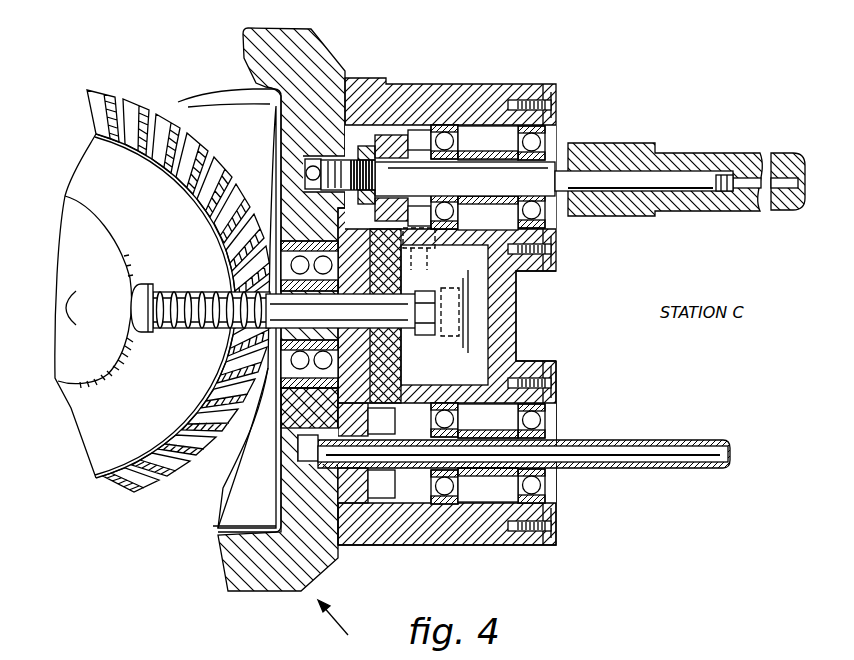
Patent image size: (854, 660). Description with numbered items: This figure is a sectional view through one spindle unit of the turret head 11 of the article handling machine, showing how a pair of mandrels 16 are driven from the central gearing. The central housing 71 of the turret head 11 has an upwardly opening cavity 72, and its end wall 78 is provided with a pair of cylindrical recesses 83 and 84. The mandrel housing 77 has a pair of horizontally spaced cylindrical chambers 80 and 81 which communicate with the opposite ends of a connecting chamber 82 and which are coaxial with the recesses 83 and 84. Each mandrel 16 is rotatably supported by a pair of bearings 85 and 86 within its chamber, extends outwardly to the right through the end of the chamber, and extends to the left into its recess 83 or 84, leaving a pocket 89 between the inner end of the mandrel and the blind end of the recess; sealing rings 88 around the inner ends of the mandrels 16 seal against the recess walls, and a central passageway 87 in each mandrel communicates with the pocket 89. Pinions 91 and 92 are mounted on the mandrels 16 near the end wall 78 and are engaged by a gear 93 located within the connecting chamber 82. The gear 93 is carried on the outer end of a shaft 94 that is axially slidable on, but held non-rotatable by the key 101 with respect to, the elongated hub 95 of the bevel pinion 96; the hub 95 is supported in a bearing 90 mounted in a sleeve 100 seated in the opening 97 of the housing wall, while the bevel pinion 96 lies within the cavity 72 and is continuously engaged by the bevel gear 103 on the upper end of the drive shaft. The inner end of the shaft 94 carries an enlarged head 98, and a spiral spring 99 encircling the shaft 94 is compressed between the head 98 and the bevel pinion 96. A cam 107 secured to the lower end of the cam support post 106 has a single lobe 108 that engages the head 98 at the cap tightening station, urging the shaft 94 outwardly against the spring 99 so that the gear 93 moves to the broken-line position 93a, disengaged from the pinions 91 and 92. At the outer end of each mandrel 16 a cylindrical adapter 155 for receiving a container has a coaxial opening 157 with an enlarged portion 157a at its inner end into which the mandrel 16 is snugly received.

The turret head 11 is at (339, 622).
The mandrel 16 is at (667, 172).
The central housing 71 is at (268, 465).
The cavity 72 is at (205, 500).
The mandrel housing 77 is at (467, 533).
The end wall 78 is at (333, 517).
The cylindrical chamber 80 is at (458, 125).
The cylindrical chamber 81 is at (473, 487).
The connecting chamber 82 is at (478, 307).
The cylindrical recess 83 is at (310, 153).
The cylindrical recess 84 is at (290, 432).
The bearing 85 is at (447, 143).
The bearing 86 is at (543, 123).
The passageway 87 is at (596, 447).
The sealing ring 88 is at (317, 178).
The pocket 89 is at (296, 177).
The bearing 90 is at (317, 362).
The pinion 91 is at (383, 139).
The pinion 92 is at (378, 468).
The gear 93 is at (430, 340).
The disengaged gear position 93a is at (418, 232).
The shaft 94 is at (190, 281).
The elongated hub 95 is at (317, 266).
The bevel pinion 96 is at (223, 333).
The opening 97 is at (309, 408).
The enlarged head 98 is at (137, 327).
The spiral spring 99 is at (158, 280).
The sleeve 100 is at (245, 448).
The key 101 is at (358, 295).
The bevel gear 103 is at (95, 435).
The cam support post 106 is at (60, 298).
The cam 107 is at (90, 347).
The lobe 108 is at (70, 203).
The cylindrical adapter 155 is at (723, 207).
The coaxial opening 157 is at (780, 170).
The enlarged portion 157a is at (712, 167).